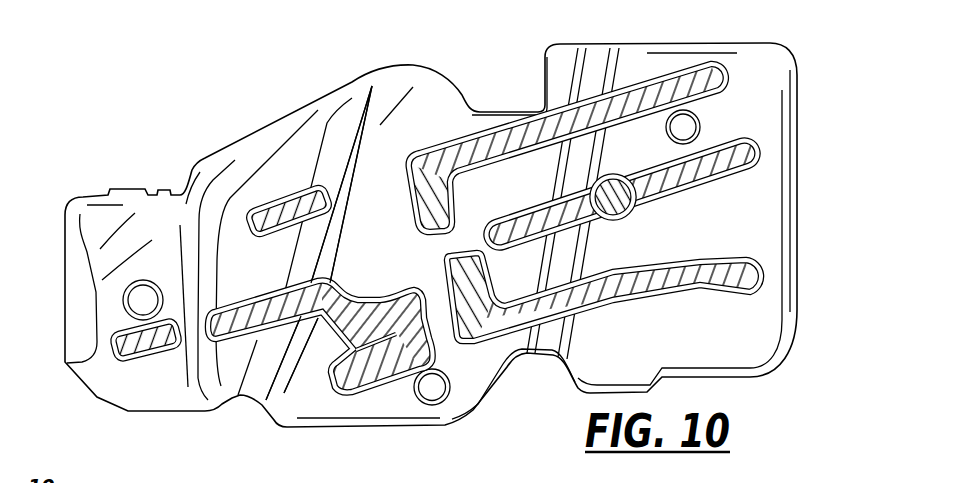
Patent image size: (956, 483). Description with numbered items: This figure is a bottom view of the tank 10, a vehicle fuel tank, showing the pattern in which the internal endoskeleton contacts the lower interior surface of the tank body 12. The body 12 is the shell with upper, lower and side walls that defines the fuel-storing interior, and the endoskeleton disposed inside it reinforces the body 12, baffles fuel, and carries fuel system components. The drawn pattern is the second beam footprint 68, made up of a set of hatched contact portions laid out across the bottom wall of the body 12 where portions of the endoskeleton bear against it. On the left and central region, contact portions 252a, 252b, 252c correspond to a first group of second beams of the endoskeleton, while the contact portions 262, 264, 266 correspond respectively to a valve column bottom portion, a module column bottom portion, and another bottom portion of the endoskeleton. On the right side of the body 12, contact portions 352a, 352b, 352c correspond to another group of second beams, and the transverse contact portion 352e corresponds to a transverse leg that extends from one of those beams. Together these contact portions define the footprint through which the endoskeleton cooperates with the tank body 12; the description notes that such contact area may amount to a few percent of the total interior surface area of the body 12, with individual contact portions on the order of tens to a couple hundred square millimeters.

The tank 10 is at (137, 56).
The body 12 is at (297, 108).
The second beam footprint 68 is at (360, 148).
The contact portion 252a is at (275, 190).
The contact portion 252b is at (203, 364).
The contact portion 252c is at (354, 400).
The contact portion 262 is at (441, 287).
The contact portion 264 is at (380, 280).
The contact portion 266 is at (328, 332).
The contact portion 352a is at (742, 63).
The contact portion 352b is at (779, 133).
The contact portion 352c is at (781, 278).
The transverse contact portion 352e is at (477, 272).